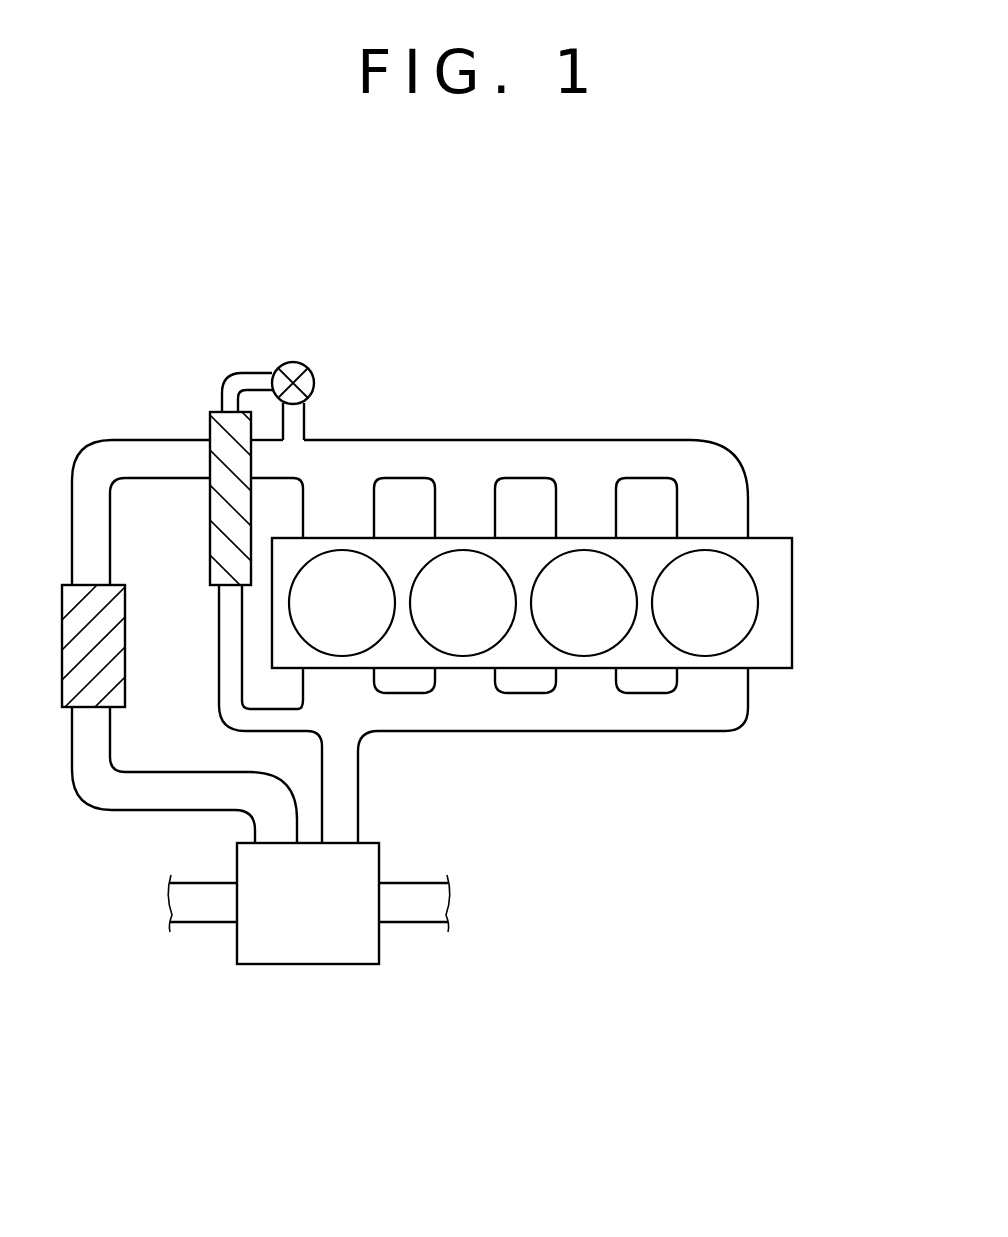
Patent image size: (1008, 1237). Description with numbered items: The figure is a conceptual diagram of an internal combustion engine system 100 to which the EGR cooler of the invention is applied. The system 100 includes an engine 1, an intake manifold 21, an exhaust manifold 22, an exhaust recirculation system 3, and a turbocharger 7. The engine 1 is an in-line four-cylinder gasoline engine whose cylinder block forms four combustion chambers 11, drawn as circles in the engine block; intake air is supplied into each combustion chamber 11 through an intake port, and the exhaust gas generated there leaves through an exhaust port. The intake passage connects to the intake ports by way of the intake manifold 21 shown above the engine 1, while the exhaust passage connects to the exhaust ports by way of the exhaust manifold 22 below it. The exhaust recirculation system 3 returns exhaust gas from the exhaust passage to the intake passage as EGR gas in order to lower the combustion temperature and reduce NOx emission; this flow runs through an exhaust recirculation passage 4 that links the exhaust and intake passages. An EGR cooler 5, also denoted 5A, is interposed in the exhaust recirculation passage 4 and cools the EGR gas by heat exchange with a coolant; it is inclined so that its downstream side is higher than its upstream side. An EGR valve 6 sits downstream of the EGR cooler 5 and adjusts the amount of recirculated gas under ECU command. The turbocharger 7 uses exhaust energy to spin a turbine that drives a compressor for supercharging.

The internal combustion engine system 100 is at (465, 619).
The engine 1 is at (570, 691).
The combustion chambers 11 is at (595, 625).
The intake manifold 21 is at (462, 440).
The exhaust manifold 22 is at (533, 736).
The exhaust recirculation system 3 is at (206, 320).
The exhaust recirculation passage 4 is at (217, 650).
The EGR cooler 5 is at (183, 468).
The filter 5A is at (210, 418).
The EGR valve 6 is at (292, 362).
The turbocharger 7 is at (306, 967).